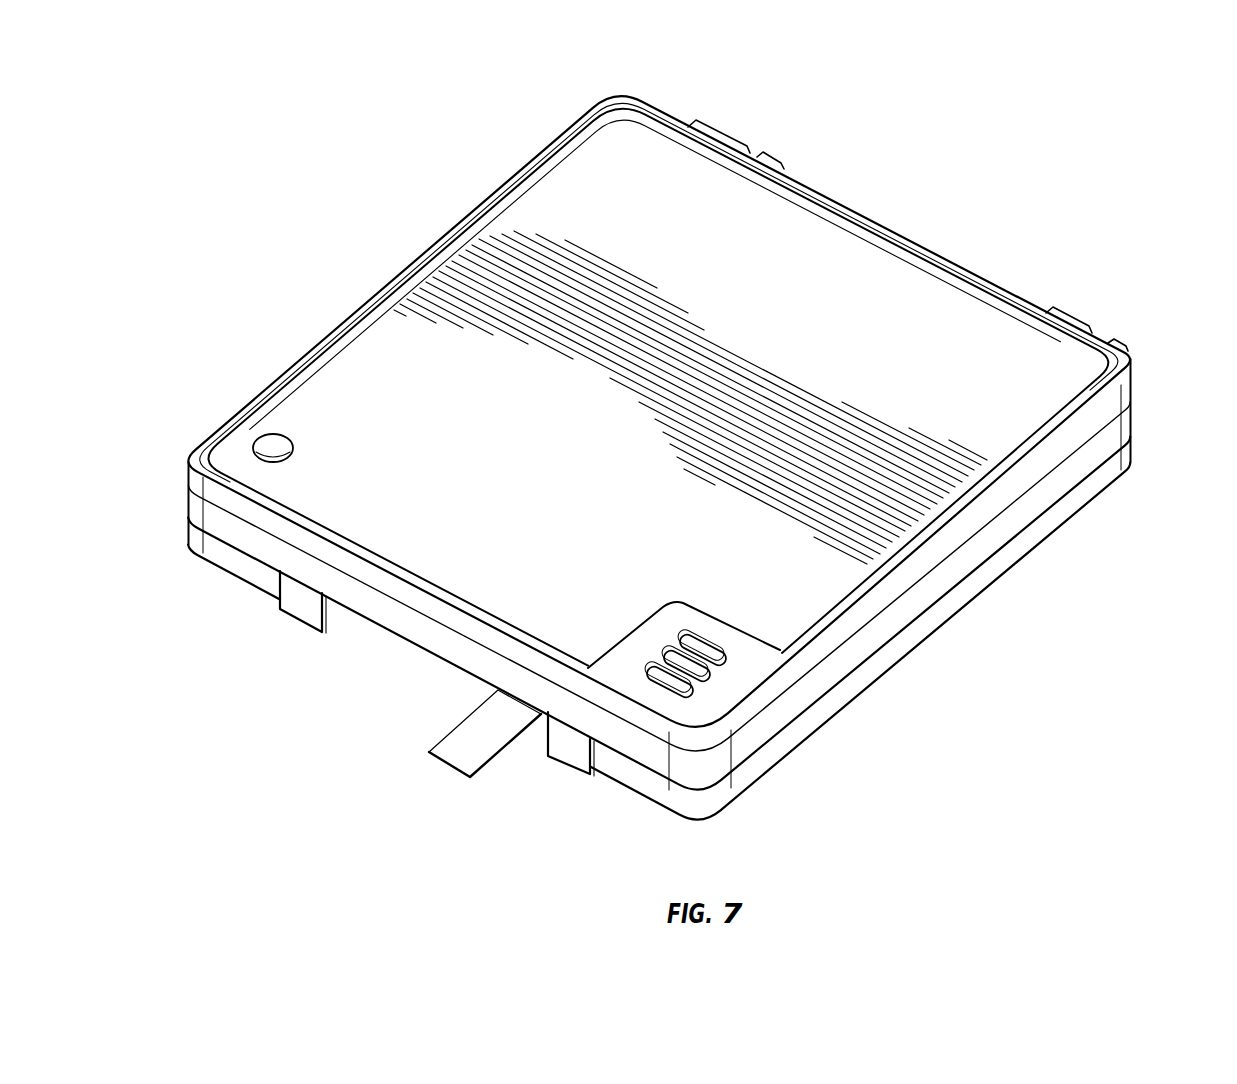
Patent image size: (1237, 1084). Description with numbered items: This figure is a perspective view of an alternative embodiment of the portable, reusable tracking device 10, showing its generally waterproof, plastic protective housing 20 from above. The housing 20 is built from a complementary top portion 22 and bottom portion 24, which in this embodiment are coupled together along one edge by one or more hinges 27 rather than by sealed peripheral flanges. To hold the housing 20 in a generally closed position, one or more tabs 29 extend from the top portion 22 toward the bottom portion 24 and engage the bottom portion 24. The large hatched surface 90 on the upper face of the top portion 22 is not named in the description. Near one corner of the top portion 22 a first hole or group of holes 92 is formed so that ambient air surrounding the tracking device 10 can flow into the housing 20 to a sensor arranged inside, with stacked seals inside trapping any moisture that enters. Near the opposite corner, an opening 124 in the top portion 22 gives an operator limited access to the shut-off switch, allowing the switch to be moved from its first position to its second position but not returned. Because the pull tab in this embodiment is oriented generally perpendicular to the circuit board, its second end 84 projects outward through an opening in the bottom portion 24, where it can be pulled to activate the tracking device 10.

The tracking device 10 is at (701, 453).
The protective housing 20 is at (706, 458).
The top portion 22 is at (903, 612).
The bottom portion 24 is at (659, 641).
The hinges 27 is at (757, 153).
The tabs 29 is at (297, 612).
The second end of the pull tab 84 is at (457, 752).
The display window 90 is at (517, 257).
The first hole 92 is at (683, 700).
The opening 124 is at (270, 450).